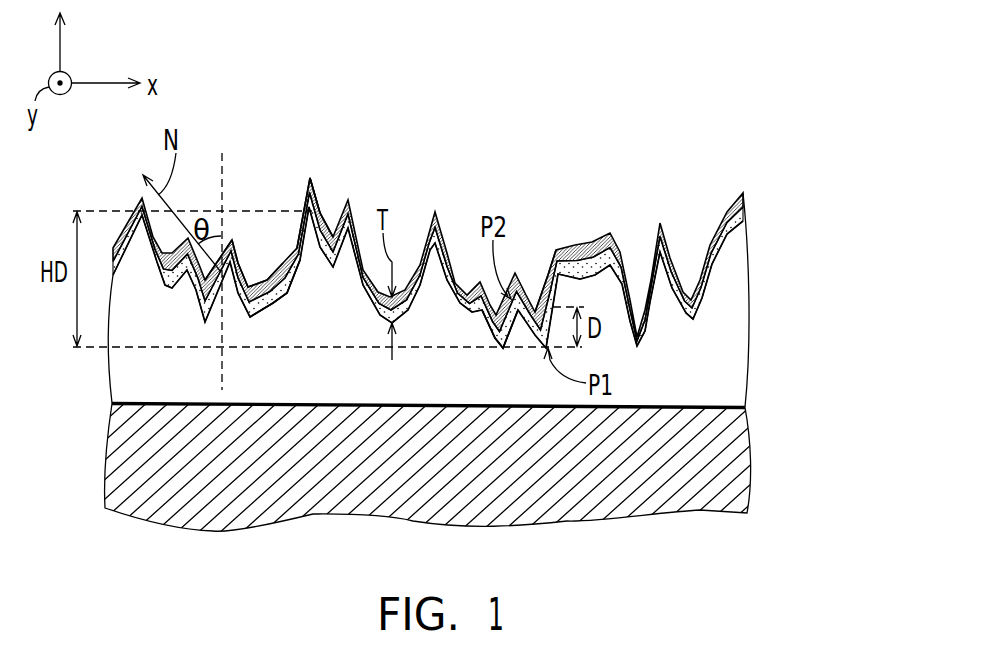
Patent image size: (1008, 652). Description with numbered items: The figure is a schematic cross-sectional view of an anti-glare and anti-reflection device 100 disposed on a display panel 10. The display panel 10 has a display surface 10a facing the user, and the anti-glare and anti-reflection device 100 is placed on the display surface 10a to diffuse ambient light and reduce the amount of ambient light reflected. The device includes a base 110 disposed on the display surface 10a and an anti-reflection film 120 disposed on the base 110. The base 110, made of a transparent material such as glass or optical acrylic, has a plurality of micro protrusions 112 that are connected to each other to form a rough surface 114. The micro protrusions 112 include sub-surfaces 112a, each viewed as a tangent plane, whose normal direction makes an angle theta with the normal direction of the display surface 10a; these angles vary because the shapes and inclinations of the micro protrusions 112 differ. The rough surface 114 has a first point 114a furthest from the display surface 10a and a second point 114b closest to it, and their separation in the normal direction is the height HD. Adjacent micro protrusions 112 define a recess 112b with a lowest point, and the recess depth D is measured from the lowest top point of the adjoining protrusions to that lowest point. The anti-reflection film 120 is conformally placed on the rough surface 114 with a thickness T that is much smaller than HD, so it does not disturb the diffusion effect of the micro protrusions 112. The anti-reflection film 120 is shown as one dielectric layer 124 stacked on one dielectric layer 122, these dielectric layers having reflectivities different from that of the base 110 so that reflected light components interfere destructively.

The display panel 10 is at (717, 468).
The display surface 10a is at (715, 396).
The anti-glare and anti-reflection device 100 is at (510, 291).
The base 110 is at (723, 350).
The micro protrusions 112 is at (249, 268).
The sub-surfaces 112a is at (230, 246).
The recess 112b is at (542, 293).
The rough surface 114 is at (284, 274).
The first point 114a is at (317, 189).
The second point 114b is at (506, 359).
The anti-reflection film 120 is at (486, 262).
The dielectric layer 122 is at (738, 220).
The dielectric layer 124 is at (741, 204).